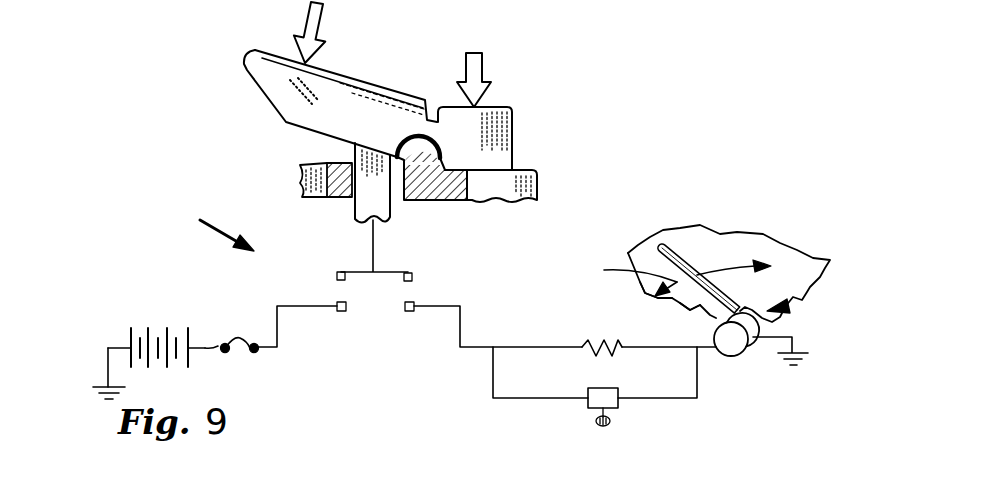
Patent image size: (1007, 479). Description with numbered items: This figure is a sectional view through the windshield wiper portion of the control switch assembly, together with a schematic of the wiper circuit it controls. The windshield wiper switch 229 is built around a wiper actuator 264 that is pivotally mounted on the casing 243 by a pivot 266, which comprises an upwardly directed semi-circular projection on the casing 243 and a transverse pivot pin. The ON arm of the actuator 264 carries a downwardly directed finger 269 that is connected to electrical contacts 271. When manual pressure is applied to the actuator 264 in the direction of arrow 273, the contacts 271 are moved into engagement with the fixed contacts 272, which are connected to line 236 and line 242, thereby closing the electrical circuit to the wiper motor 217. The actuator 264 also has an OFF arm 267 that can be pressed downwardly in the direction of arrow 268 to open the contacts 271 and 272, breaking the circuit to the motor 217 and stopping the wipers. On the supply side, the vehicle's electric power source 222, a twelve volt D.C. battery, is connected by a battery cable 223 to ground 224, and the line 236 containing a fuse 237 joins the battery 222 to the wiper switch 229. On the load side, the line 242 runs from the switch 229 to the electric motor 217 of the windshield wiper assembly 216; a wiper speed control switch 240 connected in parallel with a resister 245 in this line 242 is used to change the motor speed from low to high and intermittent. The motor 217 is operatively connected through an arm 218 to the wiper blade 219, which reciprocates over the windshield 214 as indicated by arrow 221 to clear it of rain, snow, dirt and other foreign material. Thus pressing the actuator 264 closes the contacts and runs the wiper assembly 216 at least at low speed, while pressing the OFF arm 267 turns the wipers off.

The windshield 214 is at (693, 308).
The windshield wiper assembly 216 is at (798, 305).
The electric motor 217 is at (737, 354).
The arm 218 is at (690, 271).
The wiper blade 219 is at (673, 296).
The arrow 221 is at (621, 276).
The electric power source 222 is at (167, 337).
The battery cable 223 is at (108, 348).
The ground 224 is at (103, 396).
The windshield wiper switch 229 is at (198, 224).
The line 236 is at (212, 350).
The fuse 237 is at (238, 339).
The wiper speed control switch 240 is at (617, 396).
The line 242 is at (522, 349).
The casing 243 is at (510, 194).
The resister 245 is at (587, 343).
The wiper actuator 264 is at (352, 78).
The pivot 266 is at (416, 201).
The OFF arm 267 is at (507, 140).
The arrow 268 is at (483, 72).
The finger 269 is at (357, 213).
The electrical contacts 271 is at (337, 276).
The contacts 272 is at (343, 312).
The arrow 273 is at (323, 22).